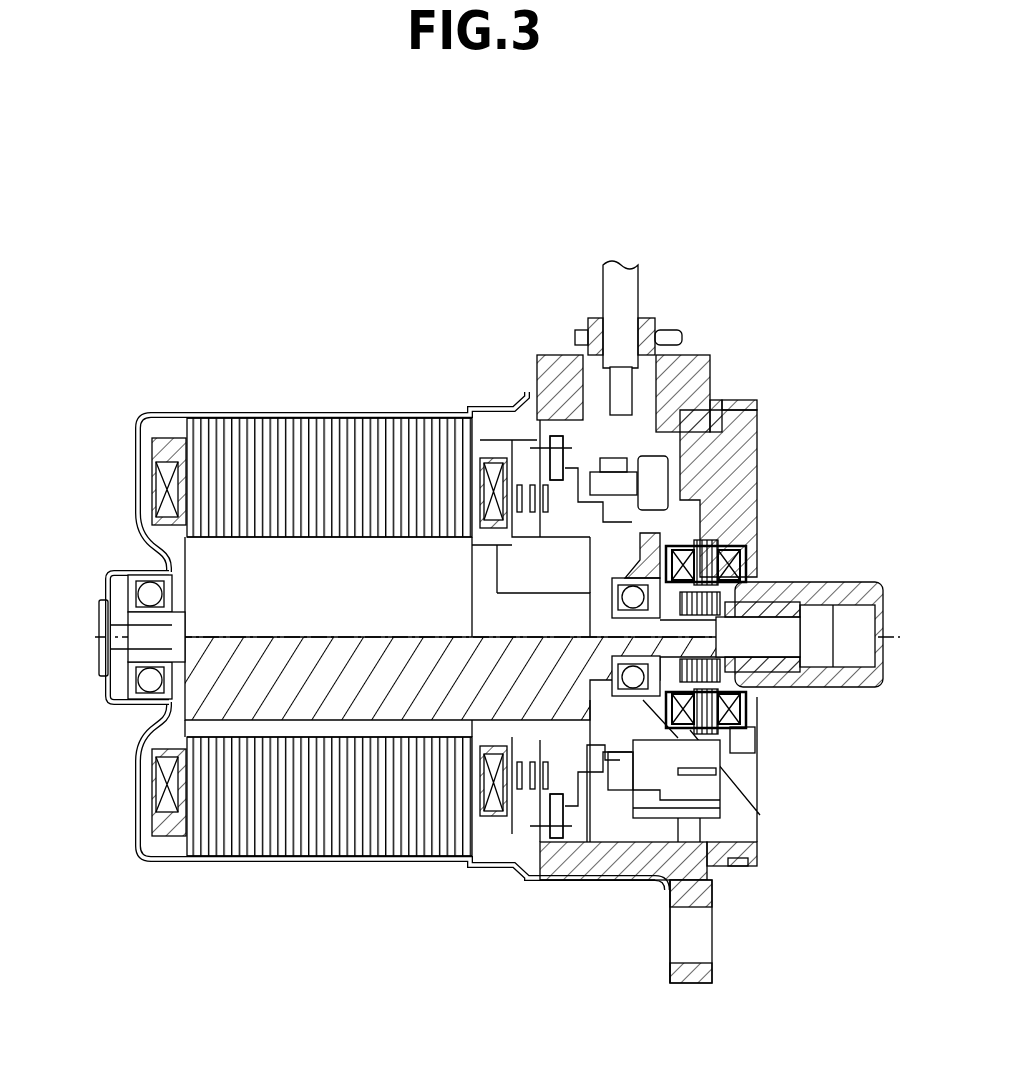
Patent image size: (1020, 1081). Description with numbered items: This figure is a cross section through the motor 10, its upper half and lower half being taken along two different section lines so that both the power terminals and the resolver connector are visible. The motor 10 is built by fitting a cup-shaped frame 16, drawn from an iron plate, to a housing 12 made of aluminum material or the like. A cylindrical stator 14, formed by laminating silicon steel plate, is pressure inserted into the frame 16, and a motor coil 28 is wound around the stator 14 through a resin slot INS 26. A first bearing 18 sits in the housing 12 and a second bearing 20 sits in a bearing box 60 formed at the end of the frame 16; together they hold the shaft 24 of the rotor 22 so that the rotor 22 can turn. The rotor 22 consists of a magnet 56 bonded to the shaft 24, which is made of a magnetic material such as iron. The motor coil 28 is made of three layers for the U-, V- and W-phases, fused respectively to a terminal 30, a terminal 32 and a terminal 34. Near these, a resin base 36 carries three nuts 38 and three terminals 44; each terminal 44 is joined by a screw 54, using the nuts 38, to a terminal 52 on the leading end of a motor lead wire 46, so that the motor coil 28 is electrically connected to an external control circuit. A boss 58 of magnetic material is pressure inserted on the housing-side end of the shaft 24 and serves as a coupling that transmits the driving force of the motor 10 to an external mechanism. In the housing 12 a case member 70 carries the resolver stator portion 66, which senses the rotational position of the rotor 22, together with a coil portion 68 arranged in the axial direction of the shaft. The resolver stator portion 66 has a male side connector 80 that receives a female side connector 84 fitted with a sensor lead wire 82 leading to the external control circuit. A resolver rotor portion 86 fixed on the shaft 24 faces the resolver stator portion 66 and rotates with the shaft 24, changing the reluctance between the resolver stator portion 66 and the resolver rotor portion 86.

The motor 10 is at (345, 316).
The housing 12 is at (718, 400).
The stator 14 is at (372, 432).
The frame 16 is at (244, 470).
The first bearing 18 is at (655, 472).
The second bearing 20 is at (150, 592).
The rotor 22 is at (210, 480).
The shaft 24 is at (535, 590).
The resin slot INS 26 is at (136, 437).
The motor coil 28 is at (156, 488).
The terminal 30 is at (500, 462).
The terminal 32 is at (546, 480).
The terminal 34 is at (556, 452).
The resin base 36 is at (665, 357).
The nut 38 is at (590, 528).
The terminal 44 is at (720, 422).
The motor lead wire 46 is at (614, 418).
The terminal 52 is at (640, 352).
The screw 54 is at (745, 415).
The magnet 56 is at (312, 552).
The boss 58 is at (856, 582).
The bearing box 60 is at (104, 600).
The resolver stator portion 66 is at (712, 532).
The coil portion 68 is at (692, 562).
The case member 70 is at (708, 560).
The male side connector 80 is at (738, 866).
The sensor lead wire 82 is at (622, 862).
The female side connector 84 is at (650, 862).
The resolver rotor portion 86 is at (735, 592).